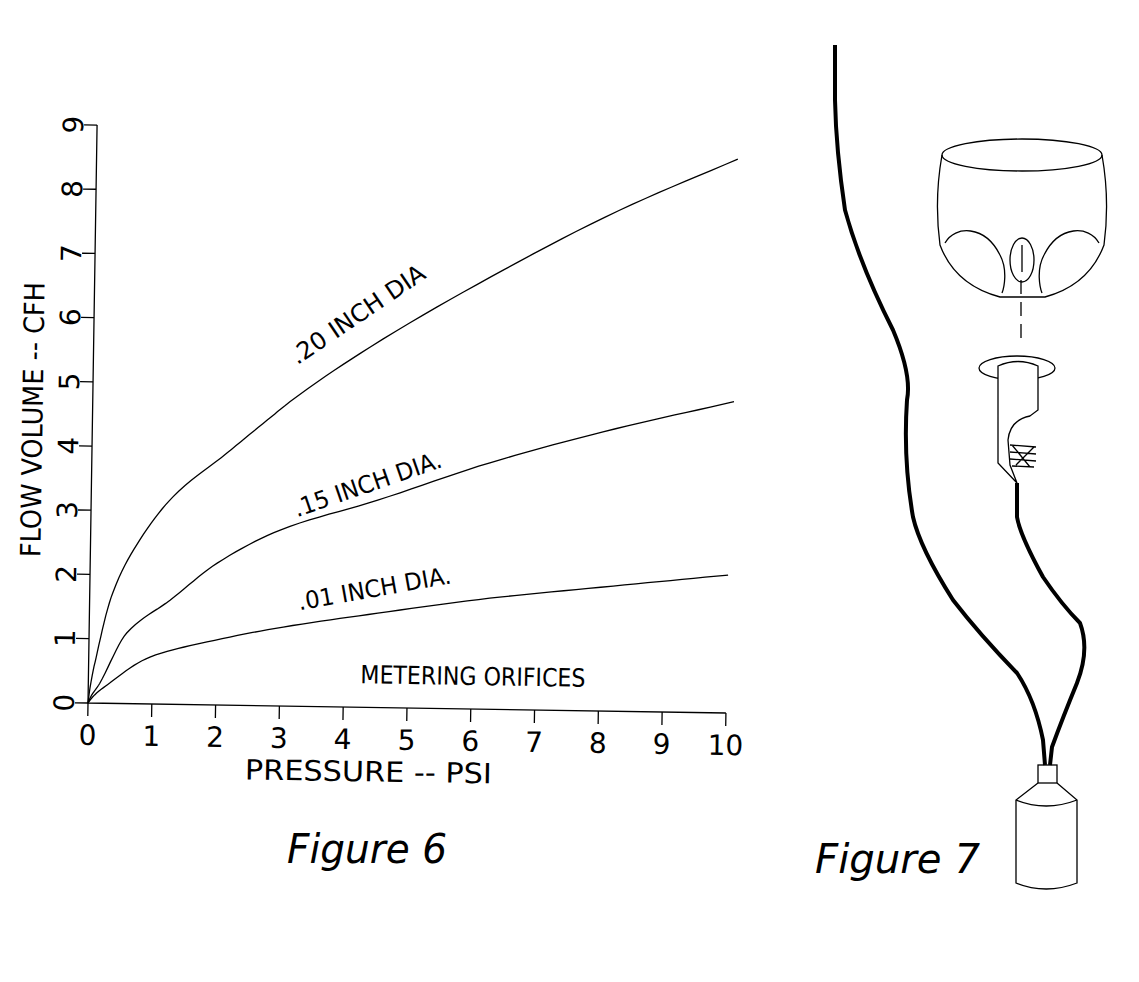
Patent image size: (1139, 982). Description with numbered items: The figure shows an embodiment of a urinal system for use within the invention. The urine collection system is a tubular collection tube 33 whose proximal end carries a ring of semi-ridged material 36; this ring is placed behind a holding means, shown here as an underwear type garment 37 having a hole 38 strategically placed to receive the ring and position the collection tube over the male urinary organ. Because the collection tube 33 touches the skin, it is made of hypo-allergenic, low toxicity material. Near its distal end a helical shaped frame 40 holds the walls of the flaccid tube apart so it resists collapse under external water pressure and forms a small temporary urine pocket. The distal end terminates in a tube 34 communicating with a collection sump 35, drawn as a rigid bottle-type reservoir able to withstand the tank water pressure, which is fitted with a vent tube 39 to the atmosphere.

The collection tube 33 is at (1038, 390).
The supply tube 34 is at (1028, 545).
The collection sump 35 is at (1027, 793).
The ring of semi-ridged material 36 is at (1040, 353).
The underwear type garment 37 is at (1011, 106).
The hole 38 is at (1011, 242).
The vent tube 39 is at (927, 545).
The helical shaped frame 40 is at (1034, 443).